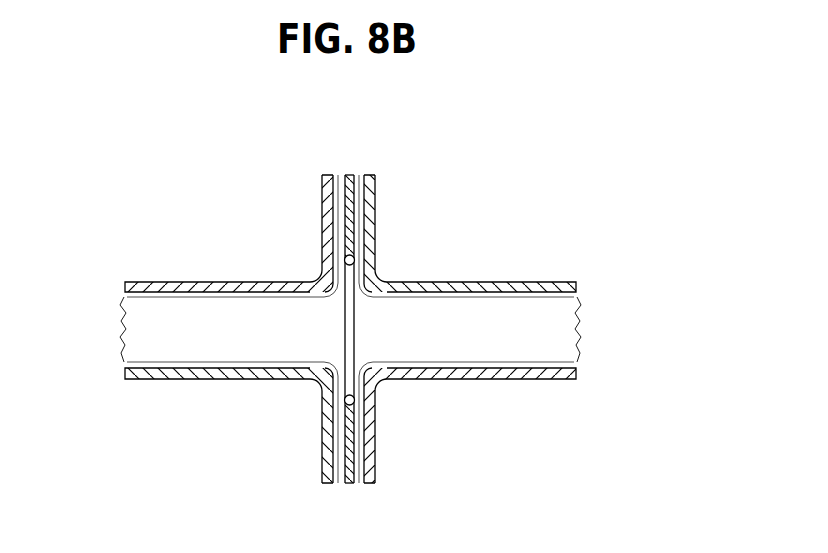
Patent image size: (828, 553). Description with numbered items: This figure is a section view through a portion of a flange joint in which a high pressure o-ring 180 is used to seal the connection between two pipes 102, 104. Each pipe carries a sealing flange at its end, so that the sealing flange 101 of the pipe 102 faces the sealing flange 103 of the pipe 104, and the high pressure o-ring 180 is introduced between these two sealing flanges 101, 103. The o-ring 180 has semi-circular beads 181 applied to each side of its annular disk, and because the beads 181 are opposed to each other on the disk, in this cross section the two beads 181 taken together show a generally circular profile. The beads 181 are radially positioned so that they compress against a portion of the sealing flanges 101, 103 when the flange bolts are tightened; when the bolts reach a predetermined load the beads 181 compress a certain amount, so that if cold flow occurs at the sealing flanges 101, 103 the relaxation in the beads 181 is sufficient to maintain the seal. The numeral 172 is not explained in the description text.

The sealing flange 101 is at (340, 202).
The pipe 102 is at (154, 282).
The sealing flange 103 is at (370, 193).
The pipe 104 is at (557, 282).
The central lumen 172 is at (344, 317).
The high pressure o-ring 180 is at (350, 176).
The semi-circular bead 181 is at (347, 401).